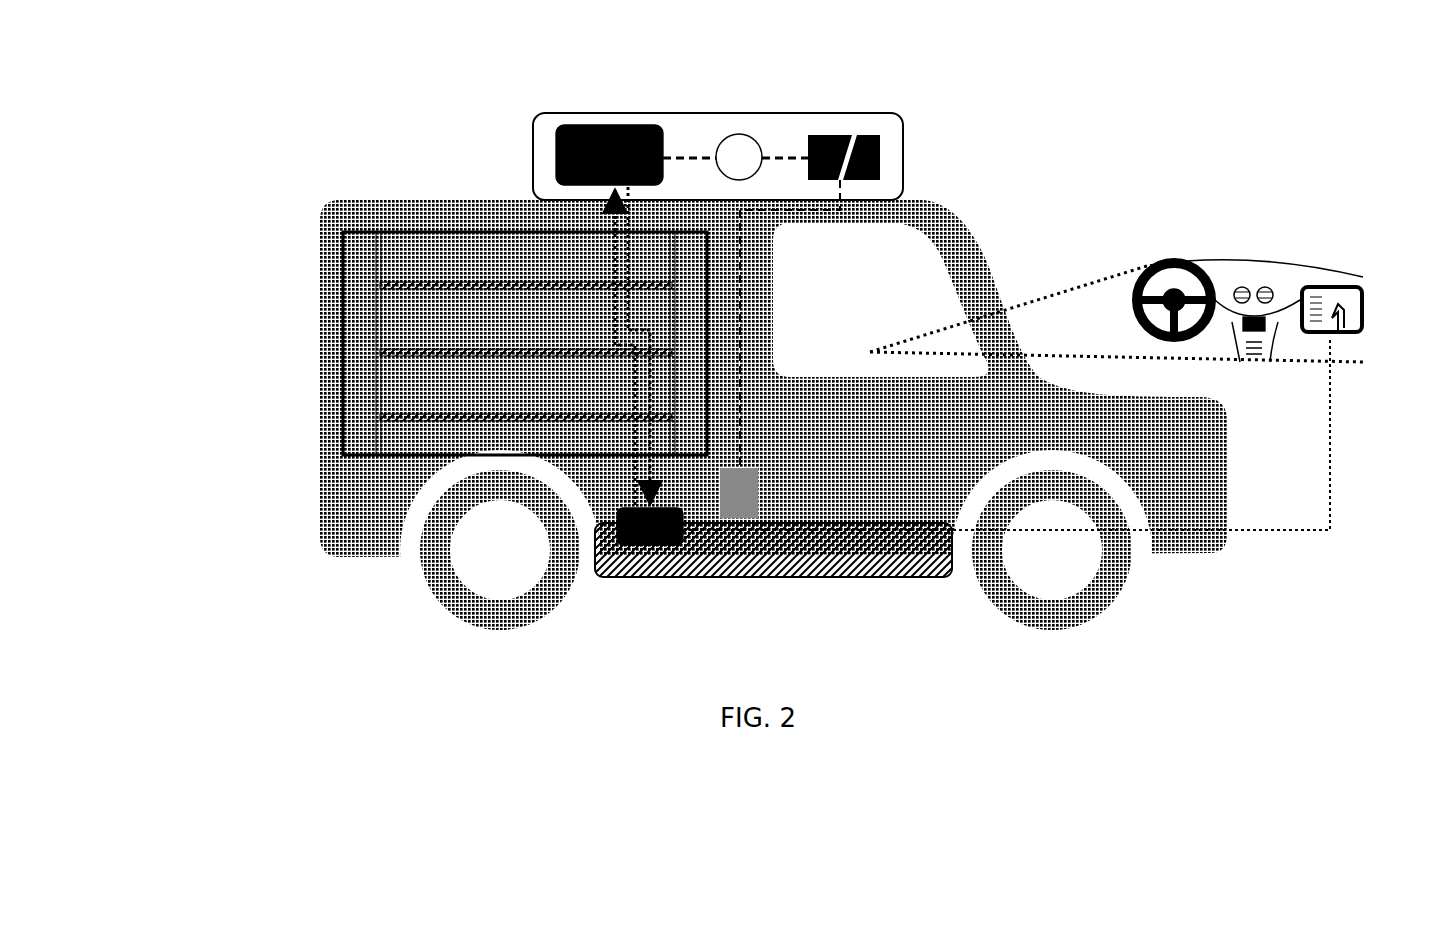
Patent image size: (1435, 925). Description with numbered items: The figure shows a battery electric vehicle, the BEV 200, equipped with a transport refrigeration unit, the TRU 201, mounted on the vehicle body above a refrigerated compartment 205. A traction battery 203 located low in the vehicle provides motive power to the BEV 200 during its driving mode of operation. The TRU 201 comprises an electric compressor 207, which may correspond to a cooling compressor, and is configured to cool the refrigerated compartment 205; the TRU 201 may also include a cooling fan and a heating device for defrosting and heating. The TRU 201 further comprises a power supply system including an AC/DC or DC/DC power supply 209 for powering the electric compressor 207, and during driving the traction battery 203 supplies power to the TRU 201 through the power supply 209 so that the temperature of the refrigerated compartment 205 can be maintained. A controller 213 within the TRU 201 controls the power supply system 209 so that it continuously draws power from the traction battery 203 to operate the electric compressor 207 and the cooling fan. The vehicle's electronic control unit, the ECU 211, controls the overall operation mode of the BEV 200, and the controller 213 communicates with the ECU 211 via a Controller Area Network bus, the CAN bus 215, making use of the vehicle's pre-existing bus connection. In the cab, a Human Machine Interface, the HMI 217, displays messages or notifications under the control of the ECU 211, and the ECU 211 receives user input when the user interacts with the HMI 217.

The BEV 200 is at (288, 132).
The TRU 201 is at (600, 108).
The traction battery 203 is at (866, 567).
The refrigerated compartment 205 is at (343, 375).
The electric compressor 207 is at (760, 135).
The AC/DC or DC/DC power supply 209 is at (878, 153).
The electronic control unit (ECU) 211 is at (650, 552).
The controller 213 is at (553, 158).
The Controller Area Network (CAN) bus 215 is at (610, 217).
The Human Machine Interface (HMI) 217 is at (1335, 284).